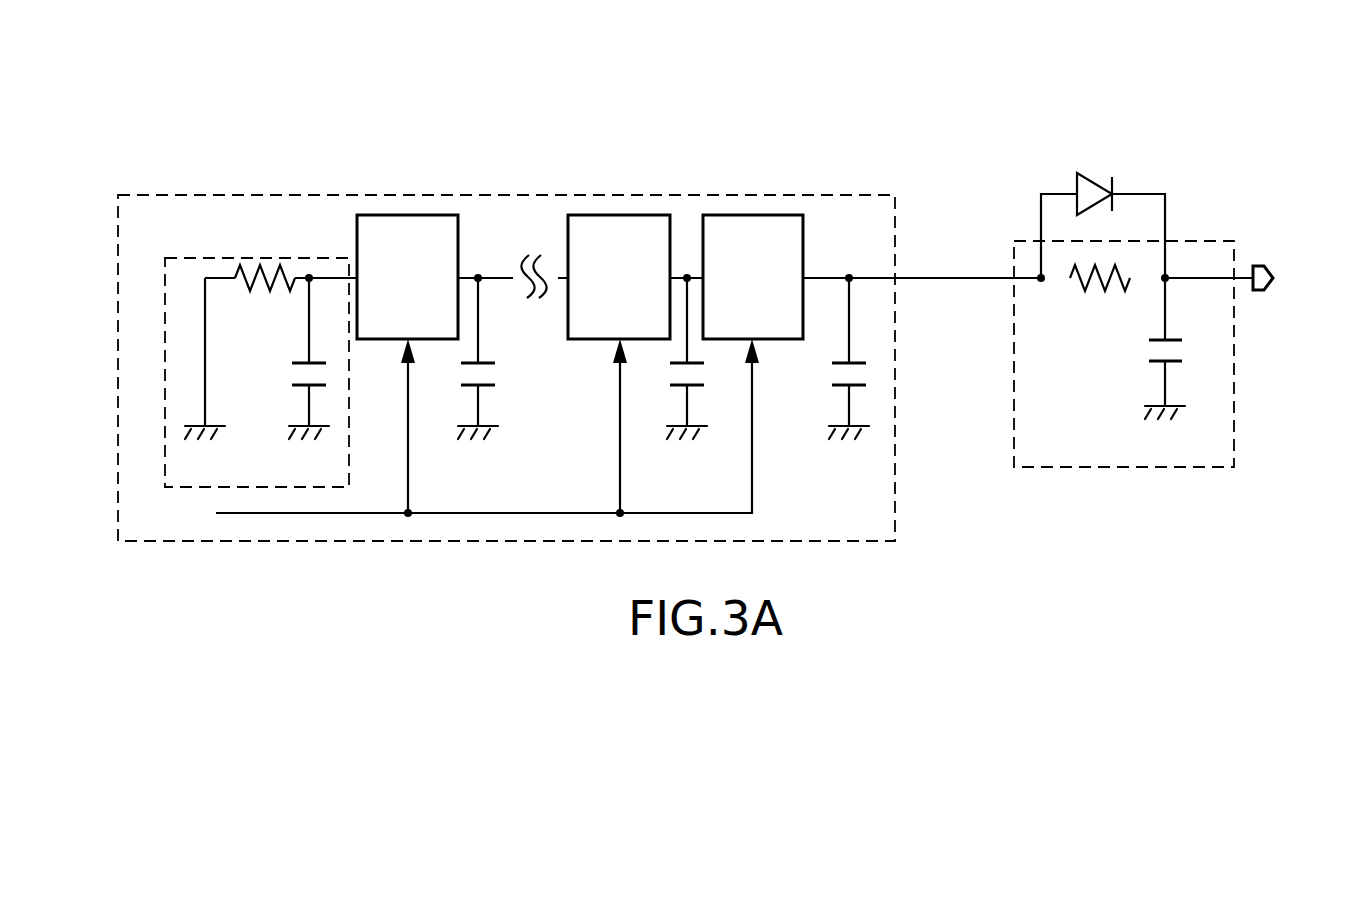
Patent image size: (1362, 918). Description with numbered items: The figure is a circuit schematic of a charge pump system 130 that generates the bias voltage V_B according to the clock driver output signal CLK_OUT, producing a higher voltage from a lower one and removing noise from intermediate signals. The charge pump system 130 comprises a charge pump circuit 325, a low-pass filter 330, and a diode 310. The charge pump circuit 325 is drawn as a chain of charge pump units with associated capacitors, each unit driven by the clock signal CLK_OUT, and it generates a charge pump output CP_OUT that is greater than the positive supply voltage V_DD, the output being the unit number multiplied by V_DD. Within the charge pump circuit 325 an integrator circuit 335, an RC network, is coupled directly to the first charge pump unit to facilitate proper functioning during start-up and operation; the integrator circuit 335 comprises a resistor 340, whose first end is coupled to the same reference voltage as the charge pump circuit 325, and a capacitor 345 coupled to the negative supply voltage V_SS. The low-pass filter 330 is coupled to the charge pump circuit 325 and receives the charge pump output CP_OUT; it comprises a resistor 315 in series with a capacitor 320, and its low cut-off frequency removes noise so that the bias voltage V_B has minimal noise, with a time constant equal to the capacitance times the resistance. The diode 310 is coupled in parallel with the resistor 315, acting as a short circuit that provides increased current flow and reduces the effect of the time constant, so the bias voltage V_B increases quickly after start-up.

The charge pump system 130 is at (168, 152).
The charge pump circuit 325 is at (293, 195).
The integrator circuit 335 is at (295, 258).
The resistor 340 is at (263, 292).
The capacitor 345 is at (300, 386).
The diode 310 is at (1090, 180).
The resistor 315 is at (1081, 293).
The capacitor 320 is at (1175, 364).
The low-pass filter 330 is at (1234, 241).